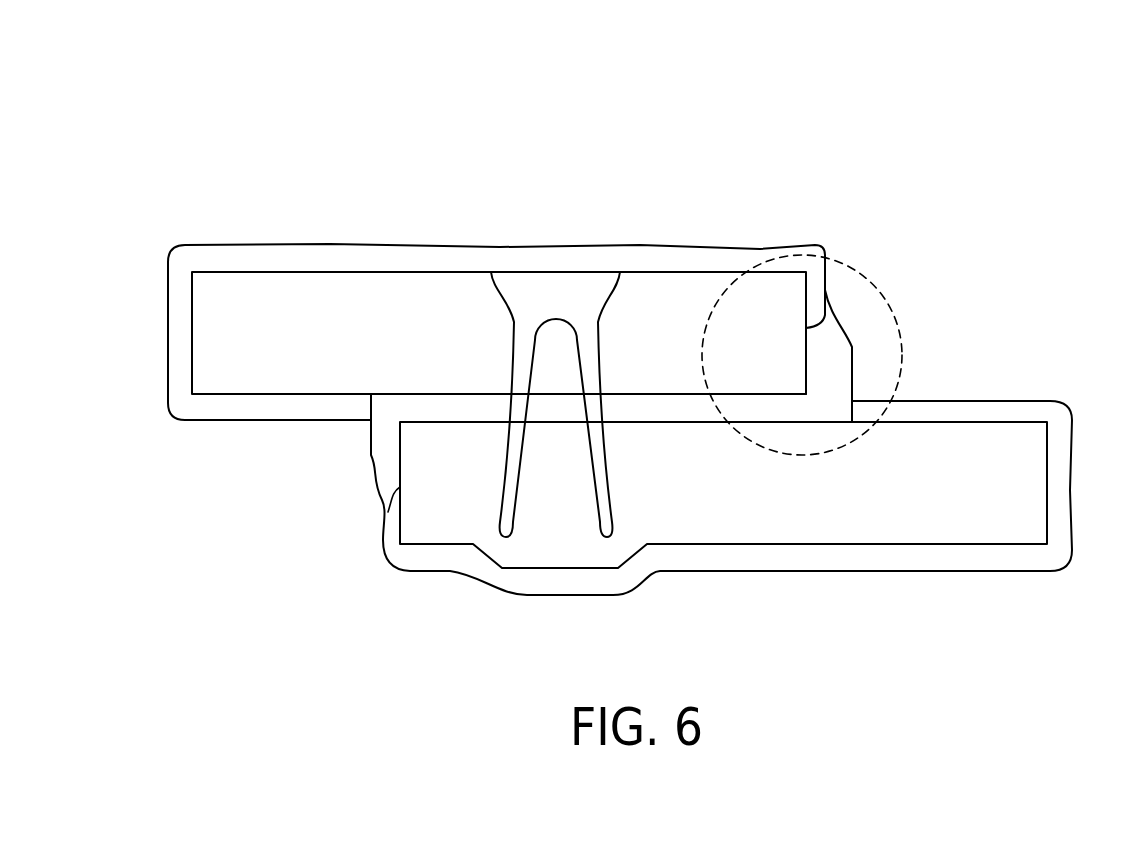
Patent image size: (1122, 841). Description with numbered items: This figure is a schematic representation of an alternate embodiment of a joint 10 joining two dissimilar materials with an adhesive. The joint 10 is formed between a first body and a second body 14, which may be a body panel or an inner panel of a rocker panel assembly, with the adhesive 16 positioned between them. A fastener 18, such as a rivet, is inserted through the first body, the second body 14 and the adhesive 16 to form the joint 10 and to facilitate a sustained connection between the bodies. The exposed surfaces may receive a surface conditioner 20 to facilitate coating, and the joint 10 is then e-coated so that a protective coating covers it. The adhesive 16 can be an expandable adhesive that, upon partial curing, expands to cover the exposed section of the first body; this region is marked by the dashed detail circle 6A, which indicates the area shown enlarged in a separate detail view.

The joint 10 is at (295, 137).
The second body 14 is at (900, 520).
The adhesive 16 is at (827, 385).
The fastener 18 is at (549, 283).
The surface conditioner 20 is at (660, 290).
The detail view circle 6A is at (866, 283).